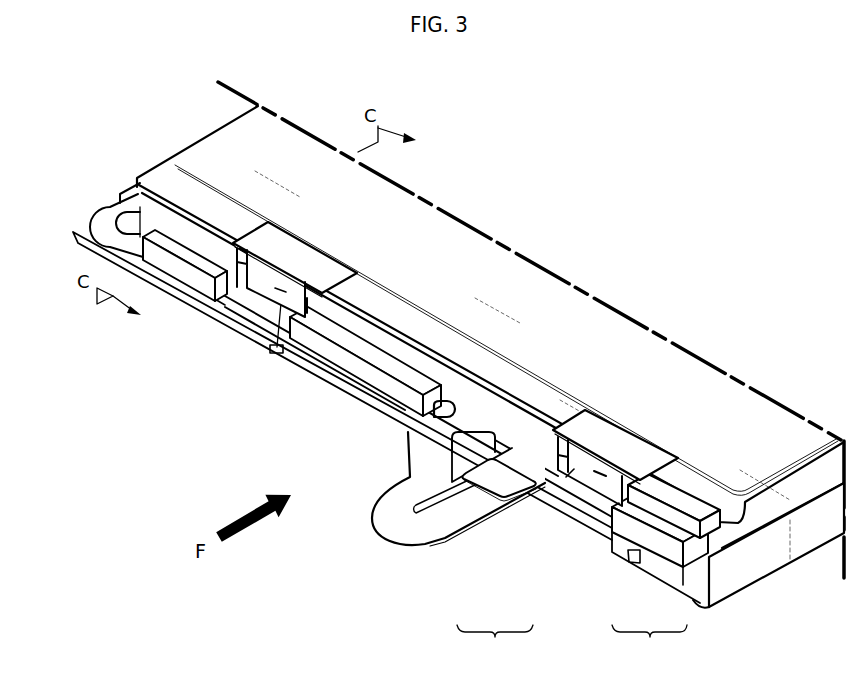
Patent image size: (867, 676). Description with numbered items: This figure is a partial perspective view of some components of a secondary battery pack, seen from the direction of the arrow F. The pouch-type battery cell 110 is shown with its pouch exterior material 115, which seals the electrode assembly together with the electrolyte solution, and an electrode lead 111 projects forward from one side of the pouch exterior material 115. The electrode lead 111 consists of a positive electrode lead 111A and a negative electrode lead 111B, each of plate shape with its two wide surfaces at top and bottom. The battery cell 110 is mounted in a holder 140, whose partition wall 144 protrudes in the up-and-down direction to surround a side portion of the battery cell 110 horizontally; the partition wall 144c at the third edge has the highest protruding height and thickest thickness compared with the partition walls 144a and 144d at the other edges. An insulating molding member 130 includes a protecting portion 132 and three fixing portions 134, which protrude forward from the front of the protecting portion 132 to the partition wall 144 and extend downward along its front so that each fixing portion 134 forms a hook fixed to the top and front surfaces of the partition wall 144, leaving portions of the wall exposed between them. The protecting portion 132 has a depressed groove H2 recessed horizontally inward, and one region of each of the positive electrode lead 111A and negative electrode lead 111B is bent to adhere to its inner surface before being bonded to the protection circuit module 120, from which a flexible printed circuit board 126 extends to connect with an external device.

The battery cell 110 is at (480, 251).
The pouch exterior material 115 is at (160, 172).
The protection circuit module 120 is at (242, 293).
The printed circuit board 126 is at (438, 528).
The insulating molding member 130 is at (649, 643).
The protecting portion 132 is at (685, 518).
The fixing portion 134 is at (197, 282).
The holder 140 is at (73, 345).
The partition wall 144 is at (434, 392).
The partition wall 144a is at (267, 286).
The partition wall 144c is at (762, 557).
The partition wall 144d is at (110, 208).
The electrode lead 111 is at (495, 643).
The positive electrode lead 111A is at (570, 472).
The negative electrode lead 111B is at (280, 288).
The depressed groove H2 is at (277, 354).